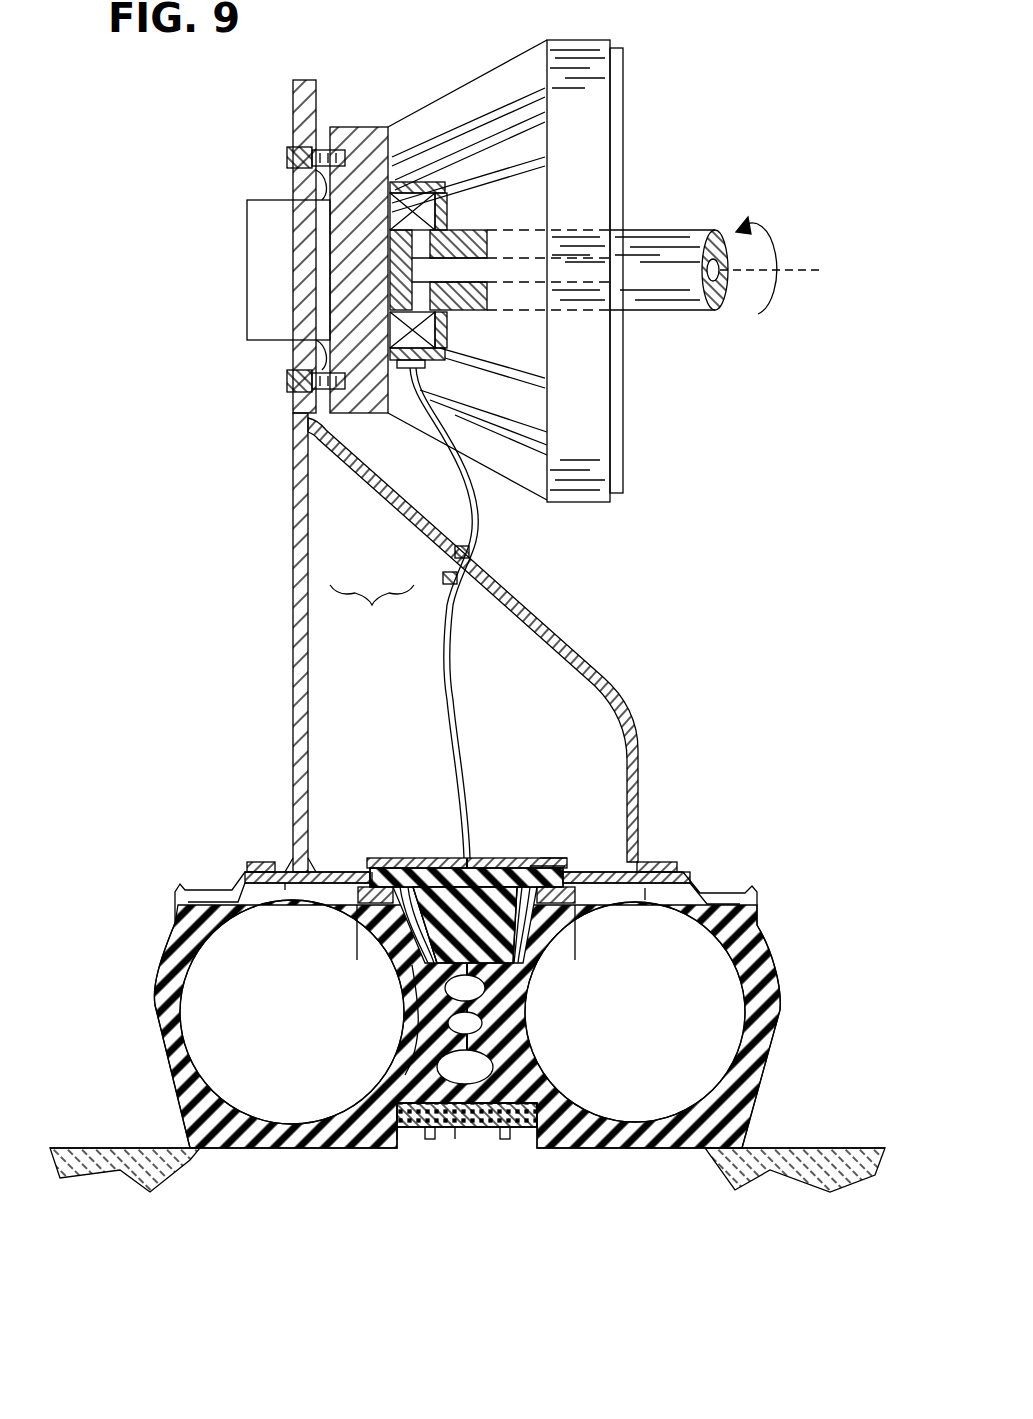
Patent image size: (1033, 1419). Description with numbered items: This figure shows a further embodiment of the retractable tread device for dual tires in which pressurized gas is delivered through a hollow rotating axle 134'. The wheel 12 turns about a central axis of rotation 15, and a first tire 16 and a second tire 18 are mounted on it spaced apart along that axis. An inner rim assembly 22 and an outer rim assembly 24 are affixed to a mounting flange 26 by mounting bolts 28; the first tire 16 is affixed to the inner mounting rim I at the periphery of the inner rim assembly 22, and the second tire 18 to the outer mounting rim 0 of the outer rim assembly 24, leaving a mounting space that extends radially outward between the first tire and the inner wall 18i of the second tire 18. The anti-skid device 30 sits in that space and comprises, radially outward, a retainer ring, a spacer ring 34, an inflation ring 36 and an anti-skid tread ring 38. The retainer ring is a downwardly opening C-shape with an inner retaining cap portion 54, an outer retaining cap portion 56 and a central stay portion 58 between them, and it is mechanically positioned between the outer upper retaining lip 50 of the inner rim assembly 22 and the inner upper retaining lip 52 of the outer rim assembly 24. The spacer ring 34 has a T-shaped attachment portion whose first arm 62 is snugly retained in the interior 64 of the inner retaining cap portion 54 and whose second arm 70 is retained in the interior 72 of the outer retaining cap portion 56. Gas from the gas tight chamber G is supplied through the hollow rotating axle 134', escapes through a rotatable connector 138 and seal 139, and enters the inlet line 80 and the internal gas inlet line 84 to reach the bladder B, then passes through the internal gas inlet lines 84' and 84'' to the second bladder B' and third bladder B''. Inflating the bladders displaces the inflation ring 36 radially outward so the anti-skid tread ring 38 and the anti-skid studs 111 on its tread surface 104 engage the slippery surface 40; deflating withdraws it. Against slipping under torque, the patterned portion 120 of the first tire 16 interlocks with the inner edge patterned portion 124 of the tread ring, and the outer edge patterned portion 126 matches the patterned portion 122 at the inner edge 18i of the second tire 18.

The wheel 12 is at (372, 603).
The axis of rotation 15 is at (790, 266).
The first tire 16 is at (778, 992).
The second tire 18 is at (157, 1002).
The inner wall of the second tire 18i is at (402, 1040).
The inner rim assembly 22 is at (430, 556).
The outer rim assembly 24 is at (309, 562).
The mounting flange 26 is at (362, 125).
The mounting bolts 28 is at (289, 155).
The anti-skid device 30 is at (522, 852).
The spacer ring 34 is at (488, 858).
The inflation ring 36 is at (492, 1026).
The anti-skid tread ring 38 is at (520, 1135).
The slippery surface 40 is at (780, 1142).
The outer upper retaining lip 50 is at (566, 896).
The inner upper retaining lip 52 is at (356, 906).
The inner retaining cap portion 54 is at (572, 876).
The outer retaining cap portion 56 is at (370, 860).
The central stay portion 58 is at (400, 858).
The first arm 62 is at (548, 866).
The interior of inner retaining cap portion 64 is at (578, 886).
The second arm 70 is at (374, 866).
The interior of outer retaining cap portion 72 is at (370, 882).
The outer mounting rim 0 is at (292, 884).
The inlet line 80 is at (455, 722).
The internal gas inlet line 84 is at (450, 672).
The internal gas inlet line 84' is at (402, 948).
The internal gas inlet line 84'' is at (438, 984).
The tread surface 104 is at (457, 1140).
The anti-skid studs 111 is at (432, 1140).
The patterned portion 120 is at (545, 1140).
The patterned portion 122 is at (402, 1140).
The inner edge patterned portion 124 is at (560, 1118).
The outer edge patterned portion 126 is at (372, 1105).
The hollow rotating axle 134' is at (690, 237).
The rotatable connector 138 is at (440, 212).
The seal 139 is at (425, 182).
The inflatable bladder B is at (465, 988).
The second bladder B' is at (427, 1023).
The third bladder B'' is at (465, 1067).
The gas tight chamber G is at (742, 296).
The inner mounting rim I is at (649, 905).